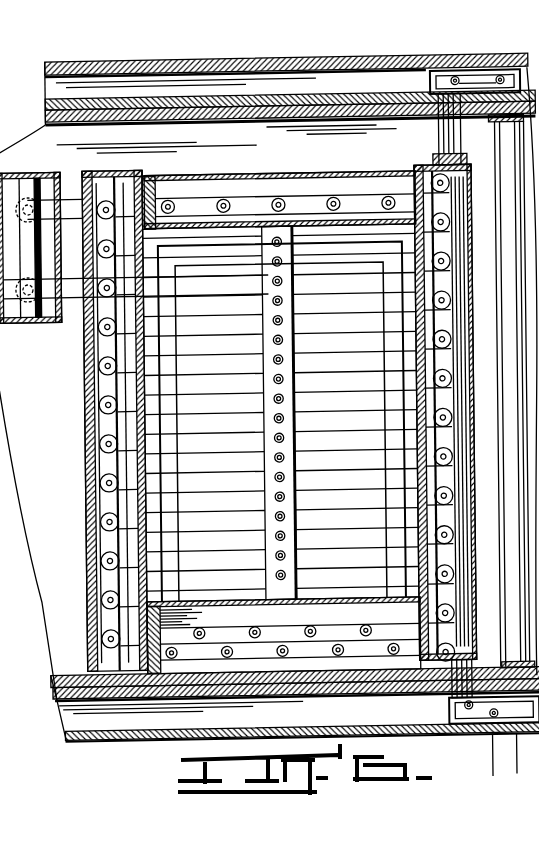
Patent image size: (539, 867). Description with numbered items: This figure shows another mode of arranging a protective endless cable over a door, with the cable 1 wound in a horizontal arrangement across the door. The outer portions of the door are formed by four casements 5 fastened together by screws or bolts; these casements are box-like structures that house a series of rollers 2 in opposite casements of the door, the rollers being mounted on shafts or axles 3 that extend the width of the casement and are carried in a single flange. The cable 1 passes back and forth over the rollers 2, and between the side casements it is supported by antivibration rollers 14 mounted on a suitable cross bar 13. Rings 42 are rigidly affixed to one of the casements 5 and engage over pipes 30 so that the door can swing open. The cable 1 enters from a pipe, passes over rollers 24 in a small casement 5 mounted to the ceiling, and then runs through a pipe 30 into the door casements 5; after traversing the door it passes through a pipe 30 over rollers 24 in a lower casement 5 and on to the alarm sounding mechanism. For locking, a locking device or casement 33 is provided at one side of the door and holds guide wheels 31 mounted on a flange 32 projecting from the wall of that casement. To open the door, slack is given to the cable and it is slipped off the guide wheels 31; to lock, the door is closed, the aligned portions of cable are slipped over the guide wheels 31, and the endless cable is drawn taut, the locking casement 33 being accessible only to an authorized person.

The cable 1 is at (517, 774).
The rollers 2 is at (100, 477).
The shafts or axles 3 is at (197, 659).
The casement 5 is at (117, 169).
The cross bar 13 is at (292, 404).
The anti-vibration rollers 14 is at (270, 493).
The rollers 24 is at (501, 82).
The pipe 30 is at (437, 140).
The rollers or guide wheels 31 is at (37, 168).
The flange 32 is at (21, 319).
The locking device or casement 33 is at (62, 319).
The rings 42 is at (465, 166).